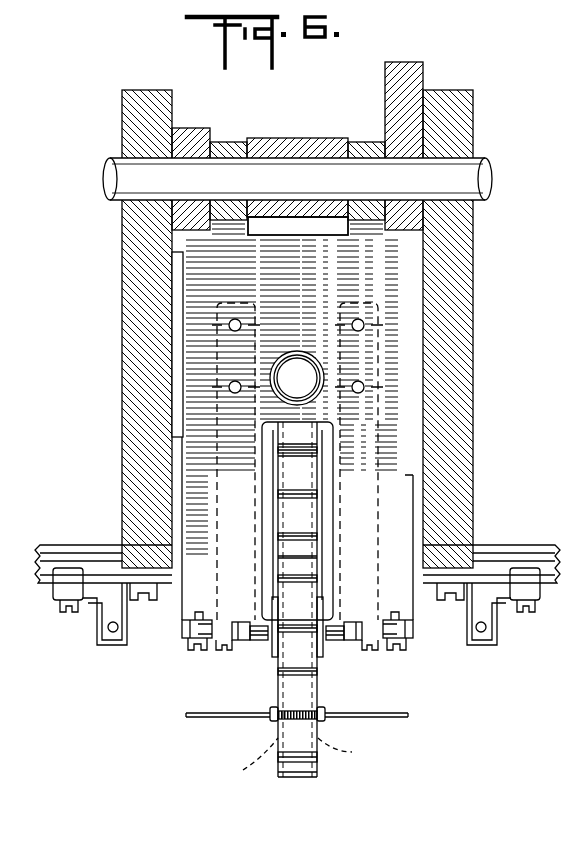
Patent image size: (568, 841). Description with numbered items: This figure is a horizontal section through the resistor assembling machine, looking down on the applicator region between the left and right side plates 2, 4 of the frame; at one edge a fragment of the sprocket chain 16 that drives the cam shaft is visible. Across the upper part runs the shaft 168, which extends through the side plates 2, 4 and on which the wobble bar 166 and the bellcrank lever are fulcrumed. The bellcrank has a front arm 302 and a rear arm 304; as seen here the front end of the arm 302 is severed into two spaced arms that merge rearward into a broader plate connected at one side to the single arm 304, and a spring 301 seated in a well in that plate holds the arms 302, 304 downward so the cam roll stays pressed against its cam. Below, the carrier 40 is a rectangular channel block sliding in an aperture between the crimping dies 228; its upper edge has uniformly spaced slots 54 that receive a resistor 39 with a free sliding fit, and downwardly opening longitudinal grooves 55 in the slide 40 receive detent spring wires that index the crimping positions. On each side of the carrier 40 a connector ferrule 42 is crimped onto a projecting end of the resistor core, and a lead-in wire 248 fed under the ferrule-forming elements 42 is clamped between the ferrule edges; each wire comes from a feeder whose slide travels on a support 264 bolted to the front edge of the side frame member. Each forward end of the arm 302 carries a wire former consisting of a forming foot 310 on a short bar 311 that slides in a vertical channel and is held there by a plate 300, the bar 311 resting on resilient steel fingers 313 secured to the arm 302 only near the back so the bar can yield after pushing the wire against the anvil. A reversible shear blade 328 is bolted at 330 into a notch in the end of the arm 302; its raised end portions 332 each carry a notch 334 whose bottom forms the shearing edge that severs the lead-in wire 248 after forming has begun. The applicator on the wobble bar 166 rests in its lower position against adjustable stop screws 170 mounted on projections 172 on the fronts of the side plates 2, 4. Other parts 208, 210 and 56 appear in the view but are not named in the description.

The left side plate 2 is at (130, 312).
The right side plate 4 is at (448, 294).
The sprocket chain 16 is at (562, 663).
The resistor 39 is at (320, 716).
The carrier 40 is at (320, 513).
The connector ferrule 42 is at (270, 712).
The slots 54 is at (322, 451).
The longitudinal grooves 55 is at (362, 762).
The washer 56 is at (313, 446).
The wobble bar 166 is at (297, 138).
The shaft 168 is at (110, 170).
The adjustable stop screws 170 is at (113, 632).
The projections 172 is at (105, 610).
The block 208 is at (193, 128).
The block 210 is at (400, 80).
The crimping dies 228 is at (272, 660).
The lead-in wire 248 is at (190, 718).
The support 264 is at (60, 553).
The plate 300 is at (240, 642).
The spring 301 is at (312, 362).
The arm 302 is at (230, 142).
The arm 304 is at (180, 296).
The forming foot 310 is at (256, 640).
The short bar 311 is at (245, 622).
The steel fingers 313 is at (380, 378).
The shear blade 328 is at (200, 606).
The bolts 330 is at (195, 650).
The raised portion 332 is at (186, 632).
The notch 334 is at (185, 627).